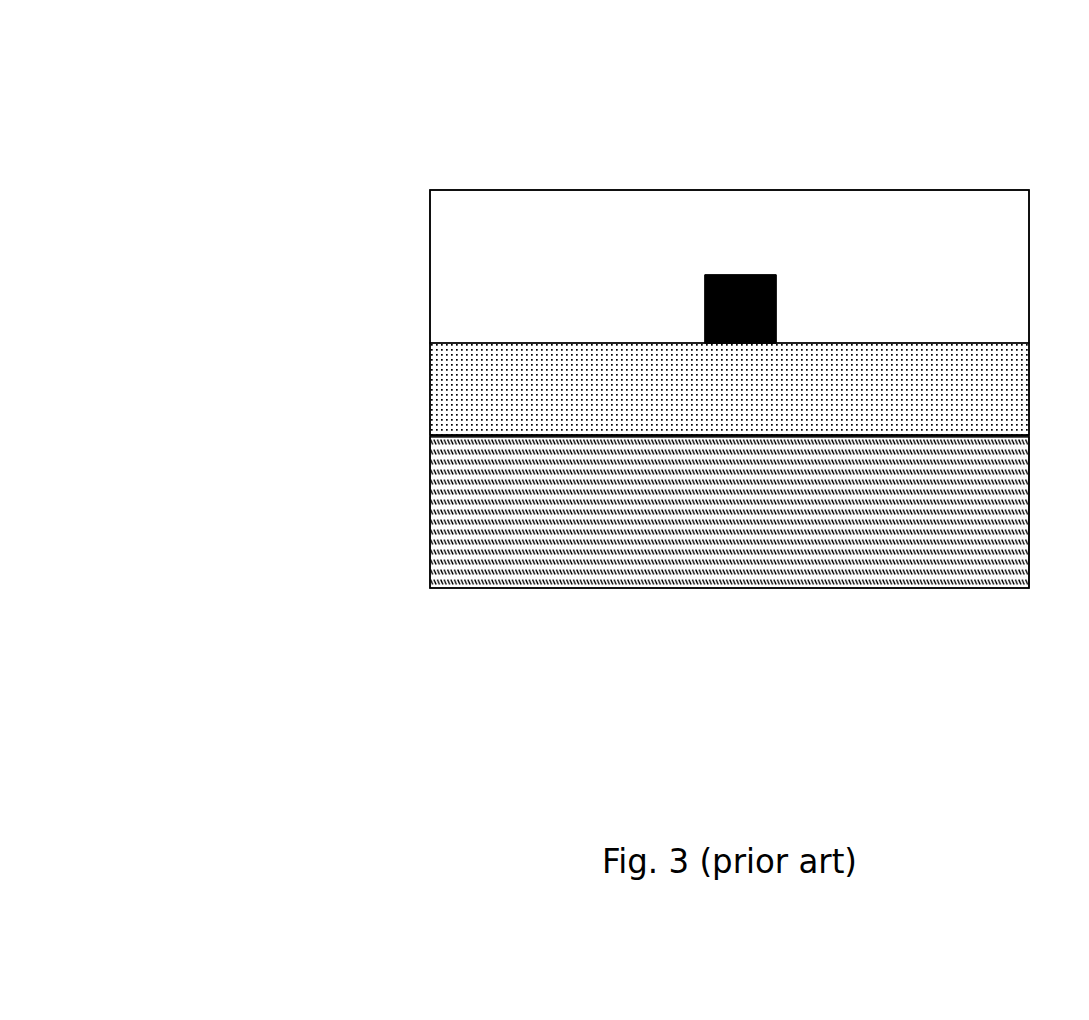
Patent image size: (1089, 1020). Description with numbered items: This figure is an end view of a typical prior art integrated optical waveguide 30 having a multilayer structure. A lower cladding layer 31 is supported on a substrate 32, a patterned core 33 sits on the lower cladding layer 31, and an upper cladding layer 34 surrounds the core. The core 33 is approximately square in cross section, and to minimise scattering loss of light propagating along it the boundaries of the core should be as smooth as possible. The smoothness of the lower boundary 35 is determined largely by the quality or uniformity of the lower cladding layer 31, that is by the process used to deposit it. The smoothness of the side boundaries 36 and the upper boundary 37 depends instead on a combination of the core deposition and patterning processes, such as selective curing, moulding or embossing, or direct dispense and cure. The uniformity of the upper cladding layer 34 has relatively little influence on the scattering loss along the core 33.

The integrated optical waveguide 30 is at (285, 198).
The lower cladding layer 31 is at (455, 387).
The substrate 32 is at (870, 563).
The patterned core 33 is at (718, 276).
The upper cladding layer 34 is at (967, 215).
The lower boundary 35 is at (748, 343).
The side boundaries 36 is at (705, 313).
The upper boundary 37 is at (744, 275).